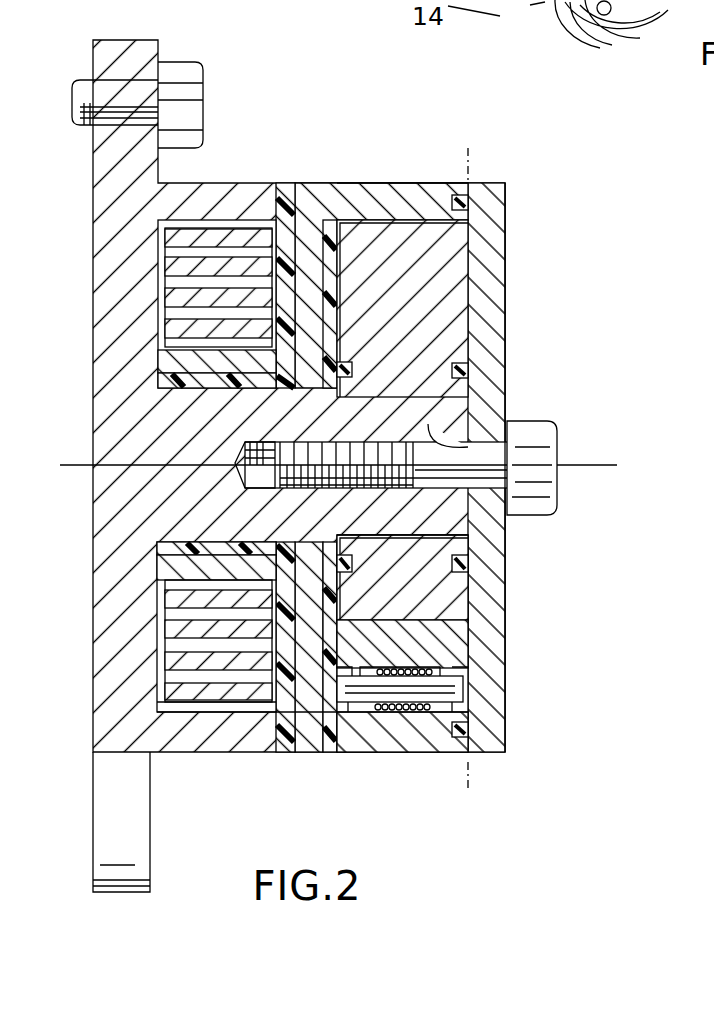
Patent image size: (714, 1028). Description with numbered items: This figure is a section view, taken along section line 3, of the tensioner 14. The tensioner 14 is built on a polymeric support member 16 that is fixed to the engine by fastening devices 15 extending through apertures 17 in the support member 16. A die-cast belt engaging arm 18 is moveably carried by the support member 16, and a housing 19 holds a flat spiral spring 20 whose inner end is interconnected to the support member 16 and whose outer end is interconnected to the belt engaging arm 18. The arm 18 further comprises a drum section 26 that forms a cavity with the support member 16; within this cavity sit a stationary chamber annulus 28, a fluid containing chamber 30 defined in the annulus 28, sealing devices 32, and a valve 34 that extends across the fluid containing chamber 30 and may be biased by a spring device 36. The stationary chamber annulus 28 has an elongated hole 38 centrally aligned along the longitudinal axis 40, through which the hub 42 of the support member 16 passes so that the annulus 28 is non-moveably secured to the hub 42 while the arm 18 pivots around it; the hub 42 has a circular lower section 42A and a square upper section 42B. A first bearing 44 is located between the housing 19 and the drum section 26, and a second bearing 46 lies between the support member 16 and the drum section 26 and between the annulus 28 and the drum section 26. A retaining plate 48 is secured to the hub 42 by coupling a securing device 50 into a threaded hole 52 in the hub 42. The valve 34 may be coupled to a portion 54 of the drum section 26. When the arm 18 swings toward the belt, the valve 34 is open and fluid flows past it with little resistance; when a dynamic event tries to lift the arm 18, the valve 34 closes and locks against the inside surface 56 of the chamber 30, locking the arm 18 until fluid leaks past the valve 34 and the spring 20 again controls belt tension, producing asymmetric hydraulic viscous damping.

The section line 3- 3 is at (435, 143).
The tensioner 14 is at (574, 247).
The fastening devices 15 is at (180, 68).
The support member 16 is at (95, 178).
The apertures 17 is at (135, 85).
The belt engaging arm 18 is at (340, 183).
The housing 19 is at (160, 300).
The spring 20 is at (178, 265).
The drum section 26 is at (407, 181).
The stationary chamber annulus 28 is at (380, 247).
The fluid containing chamber 30 is at (445, 652).
The sealing devices 32 is at (467, 205).
The valve 34 is at (353, 625).
The spring device 36 is at (393, 712).
The elongated hole 38 is at (387, 537).
The longitudinal axis 40 is at (570, 465).
The hub 42 is at (450, 513).
The circular lower section 42A is at (190, 557).
The square upper section 42B is at (423, 537).
The first bearing 44 is at (285, 183).
The second bearing 46 is at (335, 300).
The retaining plate 48 is at (495, 285).
The securing device 50 is at (540, 480).
The threaded hole 52 is at (447, 440).
The portion of the drum section 54 is at (343, 712).
The inside surface 56 is at (355, 627).